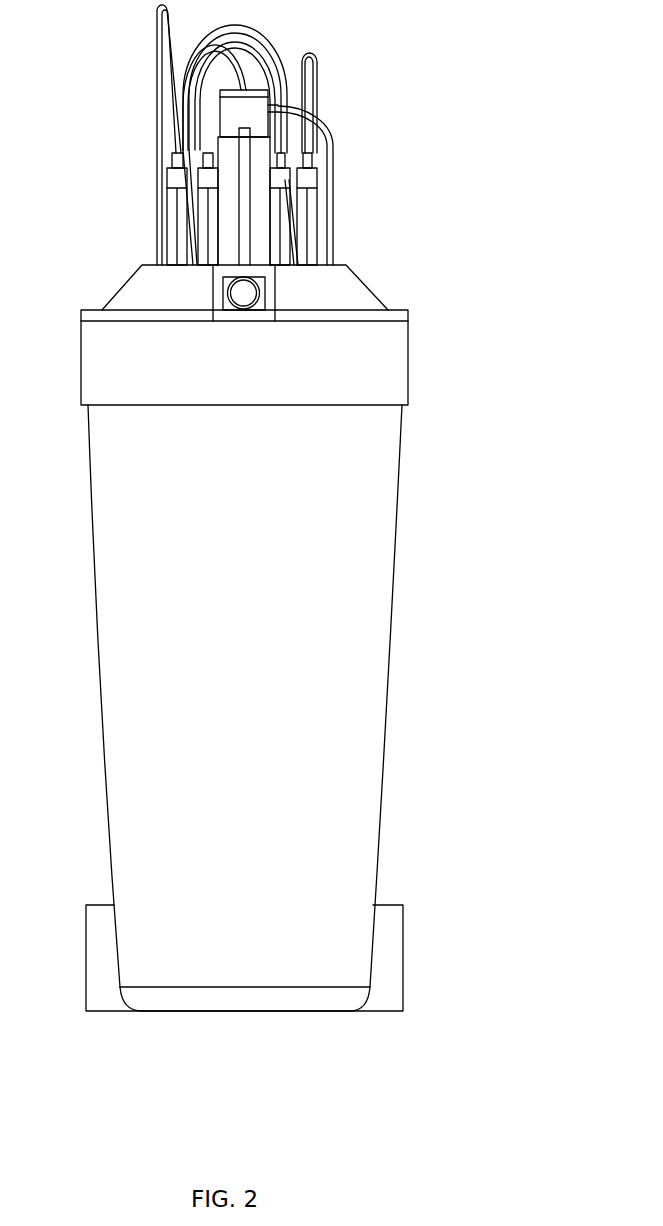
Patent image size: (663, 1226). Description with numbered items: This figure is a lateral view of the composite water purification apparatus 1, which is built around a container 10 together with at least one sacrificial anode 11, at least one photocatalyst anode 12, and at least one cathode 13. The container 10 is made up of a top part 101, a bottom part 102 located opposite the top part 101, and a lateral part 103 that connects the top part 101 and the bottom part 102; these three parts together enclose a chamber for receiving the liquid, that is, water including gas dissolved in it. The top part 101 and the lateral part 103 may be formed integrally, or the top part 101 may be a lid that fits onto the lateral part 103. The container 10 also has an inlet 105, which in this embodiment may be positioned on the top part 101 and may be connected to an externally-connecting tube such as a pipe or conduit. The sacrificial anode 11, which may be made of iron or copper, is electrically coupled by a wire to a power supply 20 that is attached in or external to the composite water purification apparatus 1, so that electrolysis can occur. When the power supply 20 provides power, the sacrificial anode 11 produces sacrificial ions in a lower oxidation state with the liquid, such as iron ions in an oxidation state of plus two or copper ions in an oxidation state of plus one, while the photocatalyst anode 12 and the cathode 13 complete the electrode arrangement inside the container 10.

The composite water purification apparatus 1 is at (294, 526).
The container 10 is at (280, 726).
The top part 101 is at (357, 295).
The bottom part 102 is at (308, 1000).
The lateral part 103 is at (376, 725).
The inlet 105 is at (242, 295).
The sacrificial anode 11 is at (280, 229).
The photocatalyst anode 12 is at (228, 204).
The cathode 13 is at (210, 230).
The power supply 20 is at (403, 937).